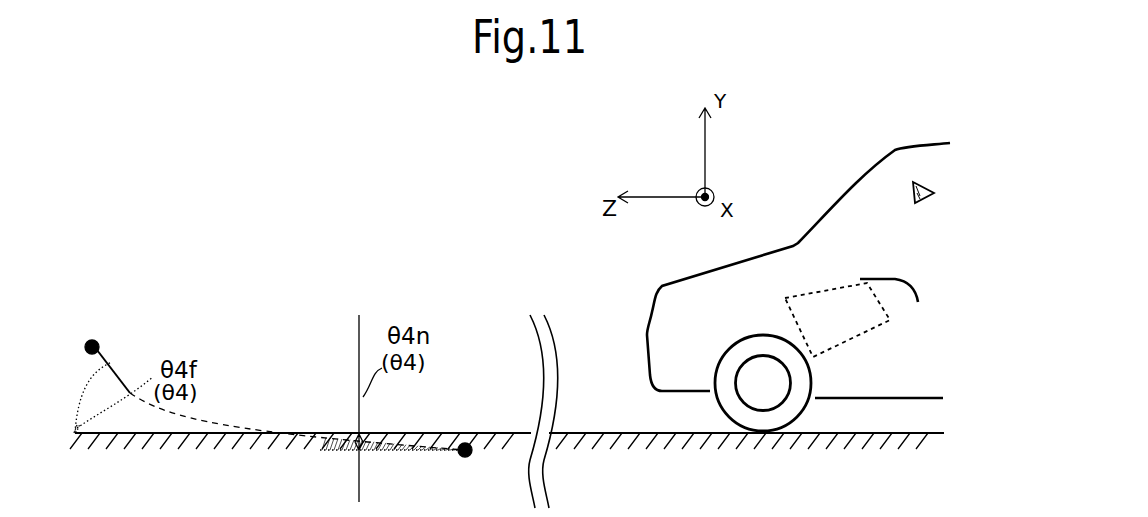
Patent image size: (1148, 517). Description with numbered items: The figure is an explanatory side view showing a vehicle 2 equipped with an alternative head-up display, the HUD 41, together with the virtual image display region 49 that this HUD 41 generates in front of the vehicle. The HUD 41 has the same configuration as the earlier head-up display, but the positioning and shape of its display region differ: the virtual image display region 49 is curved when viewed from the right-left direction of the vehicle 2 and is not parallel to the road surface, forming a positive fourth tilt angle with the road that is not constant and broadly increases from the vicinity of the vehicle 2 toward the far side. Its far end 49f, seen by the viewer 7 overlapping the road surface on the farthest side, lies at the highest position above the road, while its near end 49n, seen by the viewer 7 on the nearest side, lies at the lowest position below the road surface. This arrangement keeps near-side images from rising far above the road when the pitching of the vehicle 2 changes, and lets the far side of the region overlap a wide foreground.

The vehicle 2 is at (647, 344).
The viewer 7 is at (933, 189).
The HUD 41 is at (890, 320).
The virtual image display region 49 is at (296, 432).
The far end 49f is at (97, 344).
The near end 49n is at (470, 446).